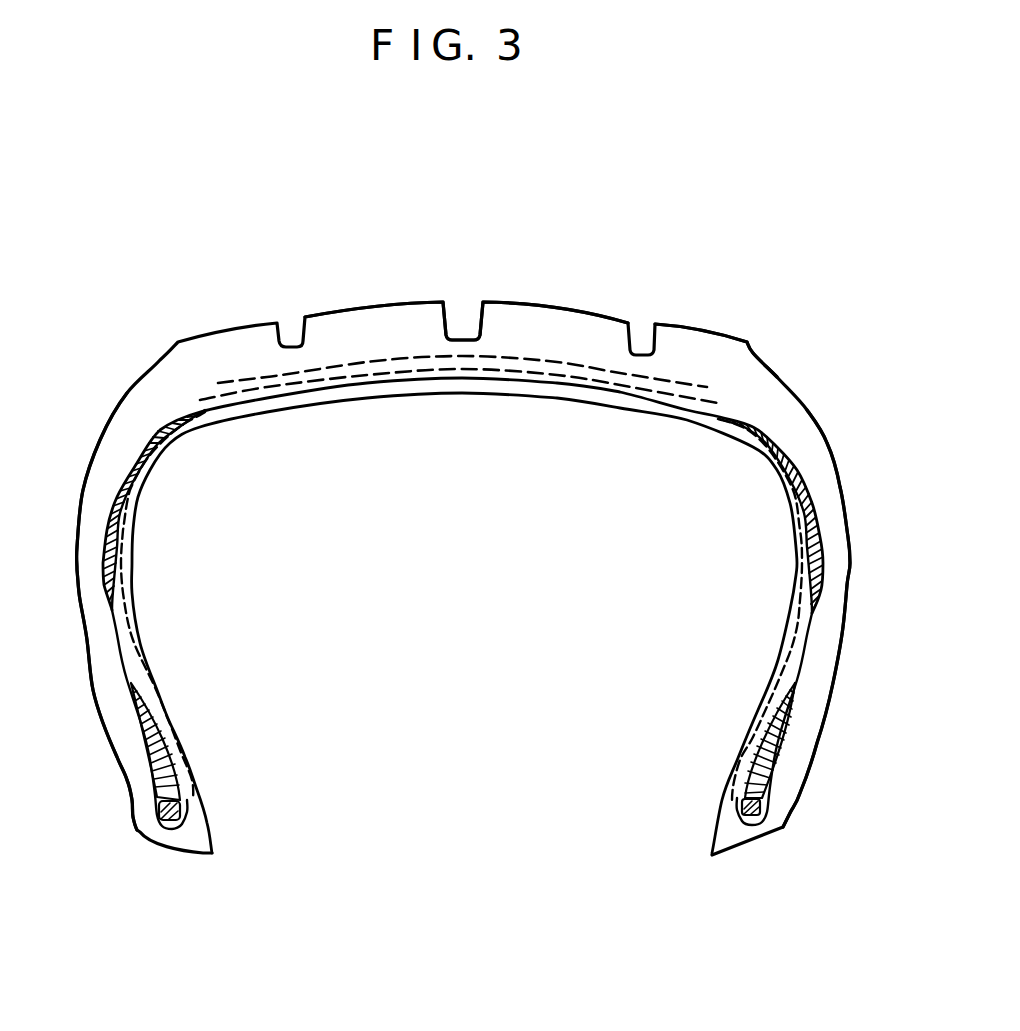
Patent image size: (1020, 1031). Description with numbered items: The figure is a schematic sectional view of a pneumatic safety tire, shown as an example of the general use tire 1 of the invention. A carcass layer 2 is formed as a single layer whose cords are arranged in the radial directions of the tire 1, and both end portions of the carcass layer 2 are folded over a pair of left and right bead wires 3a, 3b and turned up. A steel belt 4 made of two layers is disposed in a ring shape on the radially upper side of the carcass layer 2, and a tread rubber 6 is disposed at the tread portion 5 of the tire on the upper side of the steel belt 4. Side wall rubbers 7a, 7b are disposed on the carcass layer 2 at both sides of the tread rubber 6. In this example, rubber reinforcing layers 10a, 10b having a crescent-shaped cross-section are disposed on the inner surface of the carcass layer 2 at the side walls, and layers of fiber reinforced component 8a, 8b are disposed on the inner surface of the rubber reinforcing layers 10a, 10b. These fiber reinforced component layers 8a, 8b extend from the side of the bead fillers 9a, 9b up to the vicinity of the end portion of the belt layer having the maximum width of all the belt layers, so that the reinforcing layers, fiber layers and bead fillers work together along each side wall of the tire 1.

The tire 1 is at (177, 262).
The carcass layer 2 is at (217, 408).
The bead wire 3a is at (170, 822).
The bead wire 3b is at (752, 818).
The steel belt 4 is at (383, 363).
The tread portion 5 is at (518, 303).
The tread rubber 6 is at (687, 355).
The side wall rubber 7a is at (78, 580).
The side wall rubber 7b is at (849, 562).
The fiber reinforced component layer 8a is at (125, 619).
The fiber reinforced component layer 8b is at (799, 622).
The bead filler 9a is at (153, 760).
The bead filler 9b is at (762, 772).
The rubber reinforcing layer 10a is at (140, 460).
The rubber reinforcing layer 10b is at (793, 470).